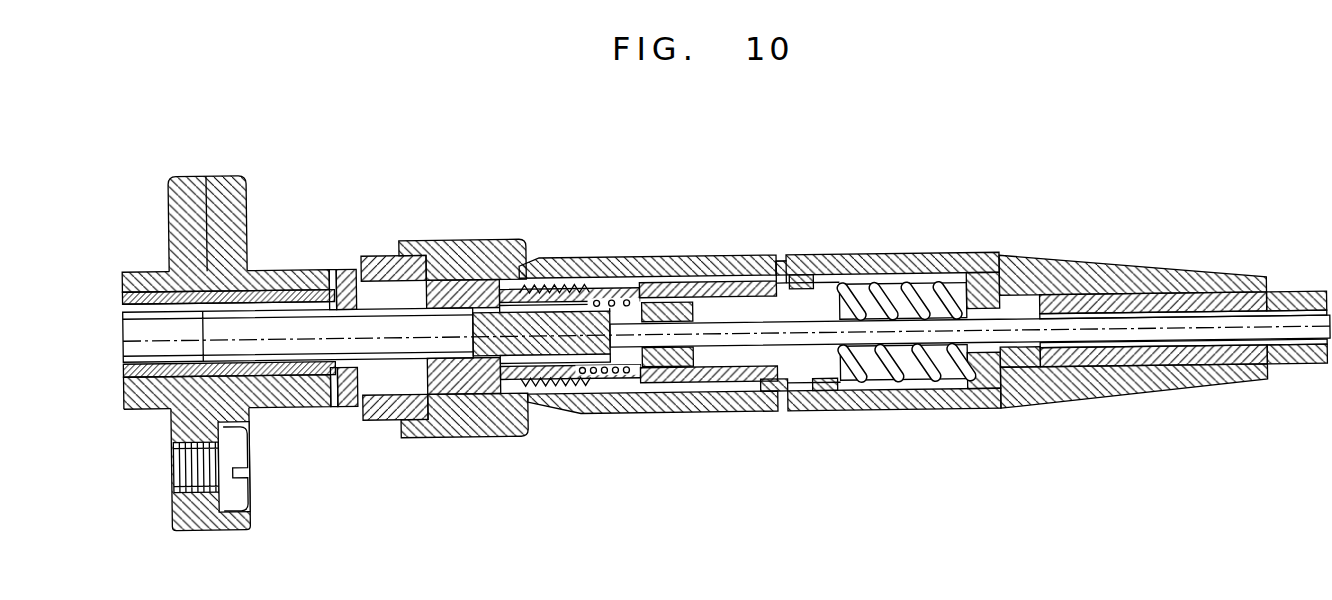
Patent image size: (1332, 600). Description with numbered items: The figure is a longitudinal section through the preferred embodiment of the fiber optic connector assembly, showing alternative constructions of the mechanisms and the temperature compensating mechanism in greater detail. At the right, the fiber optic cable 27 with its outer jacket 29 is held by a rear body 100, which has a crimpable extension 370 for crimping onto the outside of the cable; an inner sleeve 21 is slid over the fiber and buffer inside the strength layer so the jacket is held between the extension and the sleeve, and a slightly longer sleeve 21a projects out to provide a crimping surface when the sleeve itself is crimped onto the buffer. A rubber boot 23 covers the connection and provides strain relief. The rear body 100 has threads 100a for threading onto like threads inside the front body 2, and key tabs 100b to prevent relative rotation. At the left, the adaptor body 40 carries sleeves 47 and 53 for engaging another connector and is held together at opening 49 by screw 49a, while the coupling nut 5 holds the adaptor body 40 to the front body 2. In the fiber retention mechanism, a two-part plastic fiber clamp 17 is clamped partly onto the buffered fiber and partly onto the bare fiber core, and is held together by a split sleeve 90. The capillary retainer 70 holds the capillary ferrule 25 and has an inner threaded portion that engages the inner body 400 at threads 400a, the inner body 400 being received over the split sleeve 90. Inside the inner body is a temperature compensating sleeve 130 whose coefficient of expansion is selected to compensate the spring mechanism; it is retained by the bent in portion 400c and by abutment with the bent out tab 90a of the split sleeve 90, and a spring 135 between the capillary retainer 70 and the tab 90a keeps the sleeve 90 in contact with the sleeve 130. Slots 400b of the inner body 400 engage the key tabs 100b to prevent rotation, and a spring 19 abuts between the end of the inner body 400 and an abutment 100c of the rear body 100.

The front body 2 is at (440, 253).
The coupling nut 5 is at (450, 237).
The fiber clamp 17 is at (660, 327).
The spring 19 is at (878, 292).
The inner sleeve 21 is at (1057, 275).
The lengthened inner sleeve 21a is at (1010, 349).
The boot 23 is at (1113, 264).
The capillary ferrule 25 is at (356, 328).
The cable 27 is at (1283, 301).
The outer jacket 29 is at (1285, 368).
The adaptor body 40 is at (282, 265).
The sleeve 47 is at (158, 300).
The opening 49 is at (190, 494).
The screw 49a is at (230, 485).
The sleeve 53 is at (290, 373).
The capillary retainer 70 is at (460, 284).
The split sleeve 90 is at (583, 296).
The bent out tab 90a is at (628, 381).
The rear body 100 is at (980, 259).
The threads 100a is at (930, 271).
The key tabs 100b is at (823, 397).
The abutment 100c is at (955, 381).
The temperature compensating sleeve 130 is at (733, 285).
The spring 135 is at (617, 290).
The crimpable extension 370 is at (1165, 289).
The inner body 400 is at (565, 270).
The threads 400a is at (540, 283).
The slots 400b is at (800, 281).
The bent in portion 400c is at (790, 376).